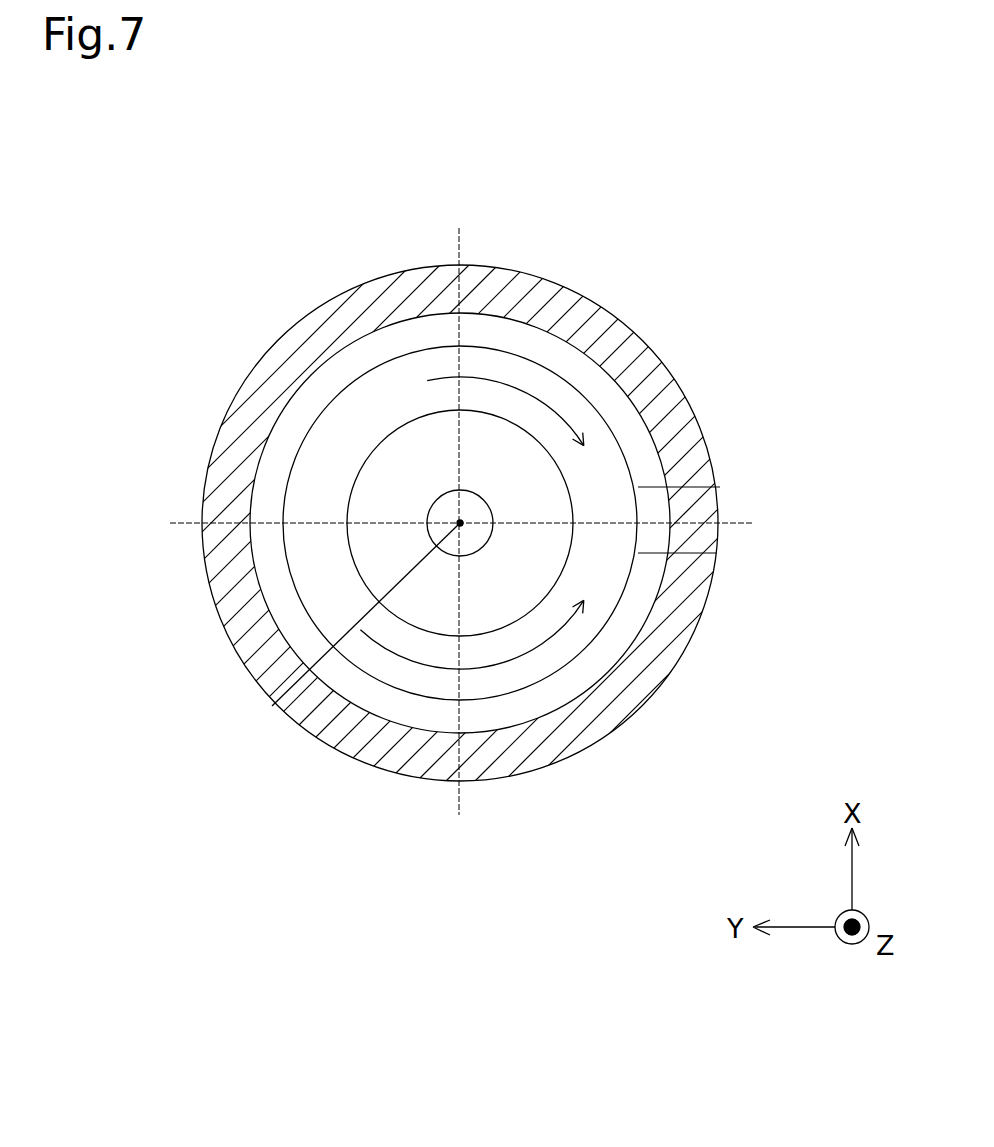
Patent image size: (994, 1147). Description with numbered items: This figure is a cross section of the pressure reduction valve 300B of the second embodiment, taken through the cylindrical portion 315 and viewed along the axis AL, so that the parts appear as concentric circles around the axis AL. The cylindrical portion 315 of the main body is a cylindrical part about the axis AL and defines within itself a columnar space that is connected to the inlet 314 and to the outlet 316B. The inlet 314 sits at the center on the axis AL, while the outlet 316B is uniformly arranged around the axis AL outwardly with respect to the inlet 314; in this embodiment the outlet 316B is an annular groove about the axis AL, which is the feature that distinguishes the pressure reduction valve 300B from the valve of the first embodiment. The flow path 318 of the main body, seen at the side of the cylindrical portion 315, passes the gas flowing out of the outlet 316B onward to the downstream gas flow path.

The pressure reduction valve 300B is at (783, 198).
The cylindrical portion 315 is at (648, 374).
The flow path 318 is at (662, 492).
The outlet 316B is at (421, 410).
The inlet 314 is at (436, 518).
The axis AL is at (272, 706).